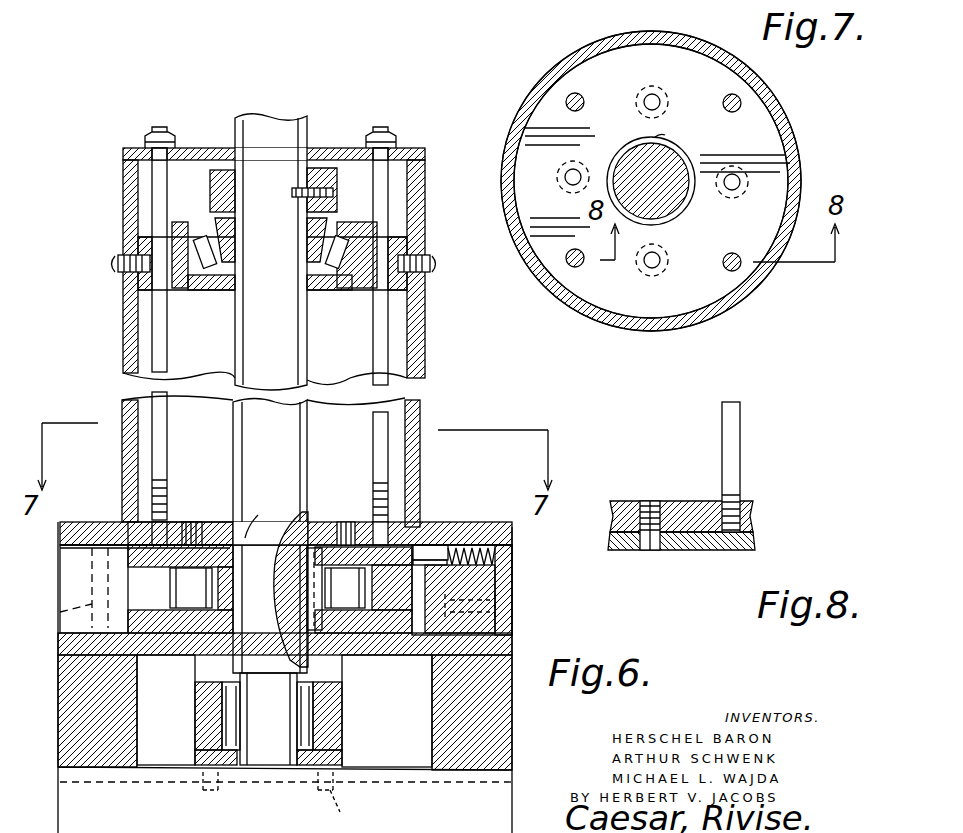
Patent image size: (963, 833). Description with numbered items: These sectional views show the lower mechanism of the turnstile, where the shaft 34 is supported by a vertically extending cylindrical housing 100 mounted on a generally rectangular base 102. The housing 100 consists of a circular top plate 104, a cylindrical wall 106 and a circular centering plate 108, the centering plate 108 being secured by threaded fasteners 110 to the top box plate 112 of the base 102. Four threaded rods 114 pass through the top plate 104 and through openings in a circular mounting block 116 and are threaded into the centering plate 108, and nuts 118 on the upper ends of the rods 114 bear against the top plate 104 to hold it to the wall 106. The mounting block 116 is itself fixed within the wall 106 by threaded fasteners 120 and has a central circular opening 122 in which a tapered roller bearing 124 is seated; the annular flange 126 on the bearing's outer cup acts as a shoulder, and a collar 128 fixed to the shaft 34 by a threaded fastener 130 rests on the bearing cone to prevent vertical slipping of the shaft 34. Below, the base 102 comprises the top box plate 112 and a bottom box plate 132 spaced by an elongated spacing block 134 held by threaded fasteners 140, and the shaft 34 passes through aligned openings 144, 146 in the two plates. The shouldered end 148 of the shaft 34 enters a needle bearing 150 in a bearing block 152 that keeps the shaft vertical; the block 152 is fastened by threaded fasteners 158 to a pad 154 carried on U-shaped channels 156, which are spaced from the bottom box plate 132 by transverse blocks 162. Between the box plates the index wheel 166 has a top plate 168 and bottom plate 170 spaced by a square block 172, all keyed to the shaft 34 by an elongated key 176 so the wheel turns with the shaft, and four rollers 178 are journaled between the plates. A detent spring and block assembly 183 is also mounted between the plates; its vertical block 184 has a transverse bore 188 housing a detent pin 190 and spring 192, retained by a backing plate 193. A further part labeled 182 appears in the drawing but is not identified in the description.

In FIG. 6, the shaft 34 is at (258, 120).
In FIG. 7, the shaft 34 is at (683, 198).
In FIG. 6, the cylindrical housing 100 is at (418, 318).
In FIG. 6, the base 102 is at (520, 537).
In FIG. 6, the top plate 104 is at (405, 148).
In FIG. 6, the cylindrical wall 106 is at (418, 360).
In FIG. 7, the cylindrical wall 106 is at (790, 138).
In FIG. 6, the centering plate 108 is at (395, 500).
In FIG. 7, the centering plate 108 is at (735, 310).
In FIG. 8, the centering plate 108 is at (753, 518).
In FIG. 6, the threaded fasteners 110 is at (192, 522).
In FIG. 7, the threaded fasteners 110 is at (655, 98).
In FIG. 8, the threaded fasteners 110 is at (655, 550).
In FIG. 6, the top box plate 112 is at (462, 522).
In FIG. 8, the top box plate 112 is at (753, 545).
In FIG. 6, the threaded rods 114 is at (160, 322).
In FIG. 7, the threaded rods 114 is at (584, 100).
In FIG. 8, the threaded rods 114 is at (735, 477).
In FIG. 6, the mounting block 116 is at (405, 252).
In FIG. 6, the nuts 118 is at (175, 140).
In FIG. 6, the threaded fasteners 120 is at (115, 275).
In FIG. 6, the circular opening 122 is at (330, 290).
In FIG. 6, the tapered roller bearing 124 is at (205, 290).
In FIG. 6, the annular flange 126 is at (185, 230).
In FIG. 6, the collar 128 is at (210, 200).
In FIG. 6, the threaded fastener 130 is at (307, 205).
In FIG. 6, the bottom box plate 132 is at (515, 648).
In FIG. 6, the spacing block 134 is at (70, 583).
In FIG. 6, the threaded fasteners 140 is at (60, 612).
In FIG. 6, the opening 144 is at (270, 502).
In FIG. 7, the opening 144 is at (658, 137).
In FIG. 6, the opening 146 is at (275, 589).
In FIG. 6, the shouldered portion 148 is at (270, 740).
In FIG. 6, the needle bearing 150 is at (225, 730).
In FIG. 6, the bearing block 152 is at (195, 700).
In FIG. 6, the pad 154 is at (342, 760).
In FIG. 6, the U-shaped channels 156 is at (500, 805).
In FIG. 6, the threaded fasteners 158 is at (286, 799).
In FIG. 6, the blocks 162 is at (60, 700).
In FIG. 6, the index wheel 166 is at (114, 553).
In FIG. 6, the top plate 168 is at (170, 565).
In FIG. 6, the bottom plate 170 is at (385, 655).
In FIG. 6, the block 172 is at (195, 655).
In FIG. 6, the key 176 is at (340, 633).
In FIG. 6, the rollers 178 is at (366, 600).
In FIG. 6, the cap plate 182 is at (120, 545).
In FIG. 6, the detent spring and block assembly 183 is at (523, 609).
In FIG. 6, the block 184 is at (510, 580).
In FIG. 6, the bore 188 is at (420, 565).
In FIG. 6, the detent pin 190 is at (420, 545).
In FIG. 6, the spring 192 is at (478, 548).
In FIG. 6, the backing plate 193 is at (515, 625).